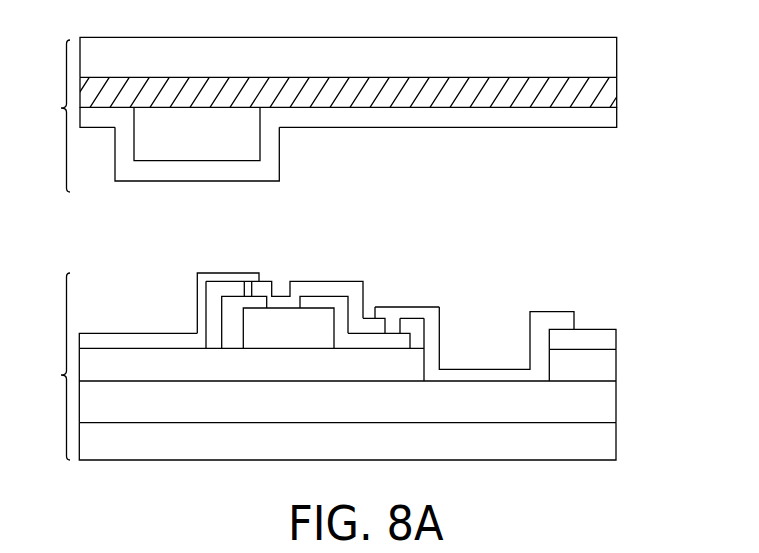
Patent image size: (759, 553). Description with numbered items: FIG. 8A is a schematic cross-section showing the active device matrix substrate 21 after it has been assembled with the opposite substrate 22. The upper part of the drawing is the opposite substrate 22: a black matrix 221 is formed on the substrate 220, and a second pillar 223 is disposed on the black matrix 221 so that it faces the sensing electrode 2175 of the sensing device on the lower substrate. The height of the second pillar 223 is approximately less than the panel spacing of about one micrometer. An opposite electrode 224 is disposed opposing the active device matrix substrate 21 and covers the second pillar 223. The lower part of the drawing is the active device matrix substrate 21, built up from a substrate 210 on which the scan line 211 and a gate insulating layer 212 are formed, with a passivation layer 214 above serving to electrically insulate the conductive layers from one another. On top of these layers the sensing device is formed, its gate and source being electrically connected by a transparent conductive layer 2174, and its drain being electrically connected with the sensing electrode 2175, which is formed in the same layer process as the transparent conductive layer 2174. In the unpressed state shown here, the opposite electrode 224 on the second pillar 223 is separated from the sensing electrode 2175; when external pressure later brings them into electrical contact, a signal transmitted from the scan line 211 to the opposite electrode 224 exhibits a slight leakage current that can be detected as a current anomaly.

The opposite substrate 22 is at (51, 116).
The substrate 220 is at (610, 63).
The black matrix 221 is at (610, 95).
The opposite electrode 224 is at (610, 120).
The second pillar 223 is at (243, 151).
The active device matrix substrate 21 is at (51, 366).
The substrate 210 is at (610, 435).
The scan line 211 is at (610, 403).
The gate insulating layer 212 is at (610, 371).
The passivation layer 214 is at (610, 340).
The transparent conductive layer 2174 is at (566, 322).
The sensing electrode 2175 is at (259, 274).